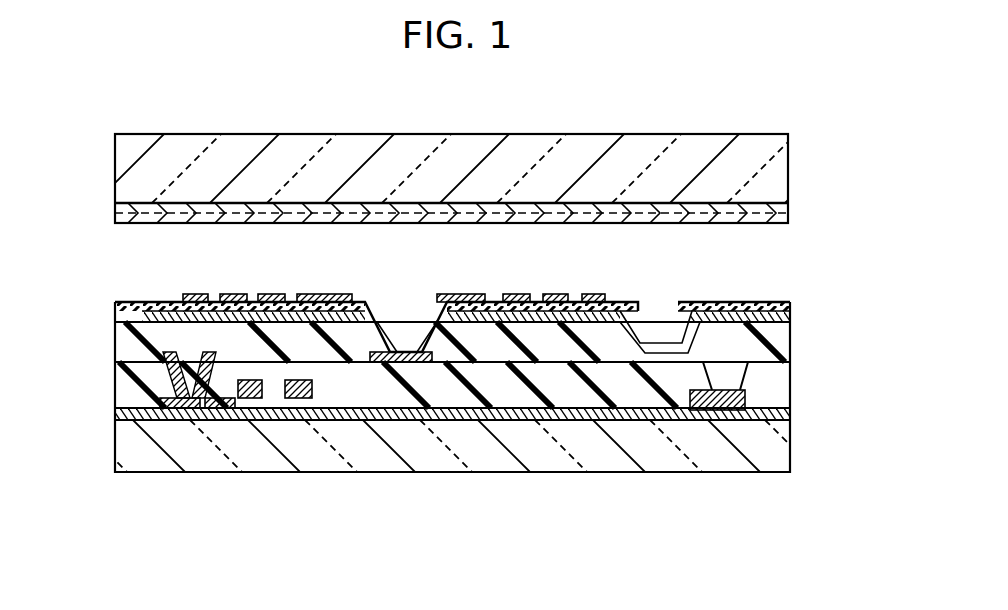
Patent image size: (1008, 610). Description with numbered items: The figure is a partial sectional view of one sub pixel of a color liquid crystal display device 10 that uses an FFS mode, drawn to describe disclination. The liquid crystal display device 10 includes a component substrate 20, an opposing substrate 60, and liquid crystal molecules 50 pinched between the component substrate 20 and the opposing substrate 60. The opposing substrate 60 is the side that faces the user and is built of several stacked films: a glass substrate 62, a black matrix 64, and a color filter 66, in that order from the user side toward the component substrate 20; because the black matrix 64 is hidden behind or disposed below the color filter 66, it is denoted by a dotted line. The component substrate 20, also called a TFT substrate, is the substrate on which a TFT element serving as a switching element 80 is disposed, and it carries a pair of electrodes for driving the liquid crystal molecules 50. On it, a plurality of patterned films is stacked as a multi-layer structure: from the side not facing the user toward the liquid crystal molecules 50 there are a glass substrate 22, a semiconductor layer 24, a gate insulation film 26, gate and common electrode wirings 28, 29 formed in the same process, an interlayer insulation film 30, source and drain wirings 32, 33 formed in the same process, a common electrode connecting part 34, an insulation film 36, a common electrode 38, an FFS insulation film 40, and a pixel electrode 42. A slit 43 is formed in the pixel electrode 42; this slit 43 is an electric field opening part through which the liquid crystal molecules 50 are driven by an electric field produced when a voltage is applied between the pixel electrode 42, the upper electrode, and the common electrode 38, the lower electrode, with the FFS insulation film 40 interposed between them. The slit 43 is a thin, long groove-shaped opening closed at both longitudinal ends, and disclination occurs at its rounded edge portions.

The liquid crystal display device 10 is at (699, 118).
The component substrate 20 is at (800, 388).
The glass substrate 22 is at (597, 455).
The semiconductor layer 24 is at (396, 414).
The gate insulation film 26 is at (333, 420).
The gate wiring 28 is at (250, 400).
The common electrode wiring 29 is at (738, 412).
The interlayer insulation film 30 is at (222, 420).
The source wiring 32 is at (420, 362).
The drain wiring 33 is at (188, 420).
The common electrode connecting part 34 is at (660, 362).
The insulation film 36 is at (520, 352).
The common electrode 38 is at (170, 302).
The FFS insulation film 40 is at (638, 308).
The pixel electrode 42 is at (235, 294).
The slit 43 is at (535, 297).
The liquid crystal molecules 50 is at (778, 272).
The opposing substrate 60 is at (798, 165).
The glass substrate 62 is at (238, 160).
The black matrix 64 is at (118, 206).
The color filter 66 is at (122, 222).
The switching element 80 is at (298, 432).